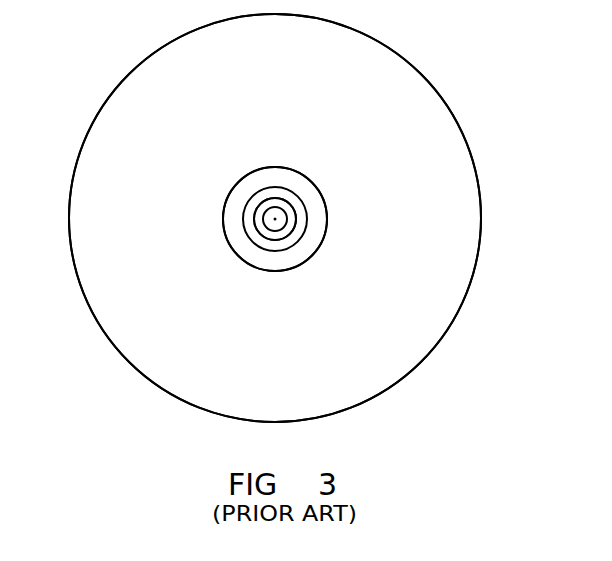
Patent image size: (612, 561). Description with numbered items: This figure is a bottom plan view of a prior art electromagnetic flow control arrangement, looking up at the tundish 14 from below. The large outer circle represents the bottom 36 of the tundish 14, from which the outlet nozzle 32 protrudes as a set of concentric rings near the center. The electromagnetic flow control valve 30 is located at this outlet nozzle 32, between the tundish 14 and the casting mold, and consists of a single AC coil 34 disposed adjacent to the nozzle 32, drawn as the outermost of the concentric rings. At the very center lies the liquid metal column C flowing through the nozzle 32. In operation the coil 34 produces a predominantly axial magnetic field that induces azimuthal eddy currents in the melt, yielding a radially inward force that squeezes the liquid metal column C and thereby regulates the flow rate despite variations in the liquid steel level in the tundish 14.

The tundish 14 is at (134, 375).
The electromagnetic flow control valve 30 is at (330, 171).
The outlet nozzle 32 is at (262, 197).
The single AC coil 34 is at (310, 242).
The bottom 36 is at (410, 343).
The liquid metal column C is at (275, 219).